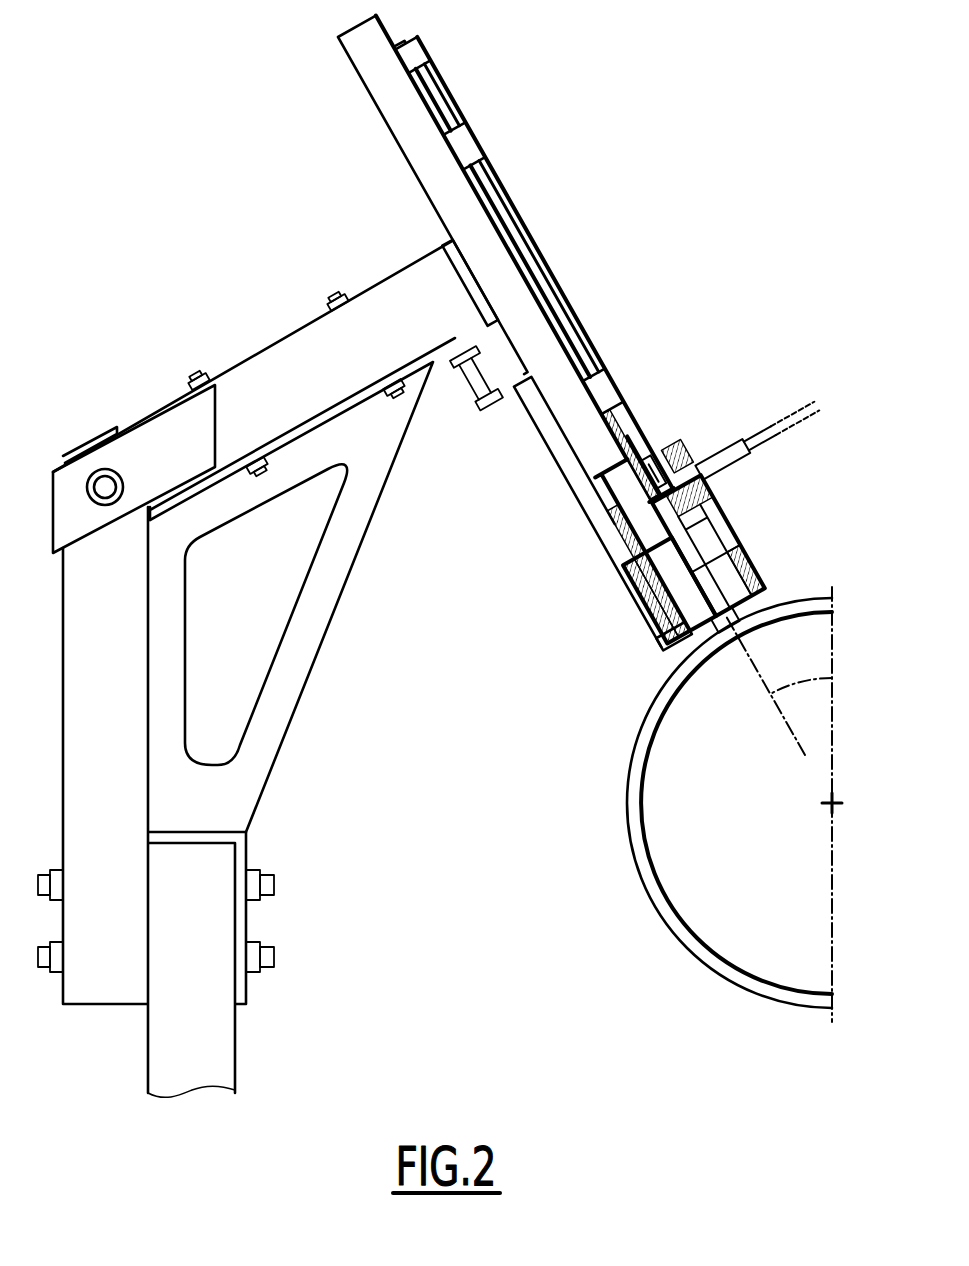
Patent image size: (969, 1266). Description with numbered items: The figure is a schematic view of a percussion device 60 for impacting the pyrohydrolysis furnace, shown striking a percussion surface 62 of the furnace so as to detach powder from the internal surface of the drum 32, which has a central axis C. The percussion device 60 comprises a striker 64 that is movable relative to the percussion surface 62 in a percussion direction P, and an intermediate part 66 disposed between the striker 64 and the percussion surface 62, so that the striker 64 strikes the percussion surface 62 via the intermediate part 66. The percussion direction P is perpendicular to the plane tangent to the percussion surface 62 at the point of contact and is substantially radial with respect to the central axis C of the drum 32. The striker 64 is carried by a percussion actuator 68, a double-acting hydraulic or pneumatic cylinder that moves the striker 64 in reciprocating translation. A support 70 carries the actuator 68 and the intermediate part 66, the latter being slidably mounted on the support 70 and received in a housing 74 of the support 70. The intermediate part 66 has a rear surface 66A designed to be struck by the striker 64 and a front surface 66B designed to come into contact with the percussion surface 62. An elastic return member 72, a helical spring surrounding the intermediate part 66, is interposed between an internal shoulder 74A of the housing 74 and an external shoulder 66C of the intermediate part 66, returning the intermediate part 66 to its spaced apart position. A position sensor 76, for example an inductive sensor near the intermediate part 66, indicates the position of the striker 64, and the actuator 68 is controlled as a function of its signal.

The percussion device 60 is at (640, 258).
The percussion actuator 68 is at (536, 250).
The striker 64 is at (643, 460).
The support 70 is at (557, 440).
The housing 74 is at (653, 577).
The elastic return member 72 is at (668, 612).
The internal shoulder 74A is at (660, 643).
The intermediate part 66 is at (743, 562).
The rear surface 66A is at (710, 513).
The front surface 66B is at (728, 633).
The external shoulder 66C is at (733, 547).
The position sensor 76 is at (723, 460).
The percussion surface 62 is at (625, 820).
The drum 32 is at (660, 898).
The percussion direction P is at (836, 678).
The central axis C is at (838, 800).